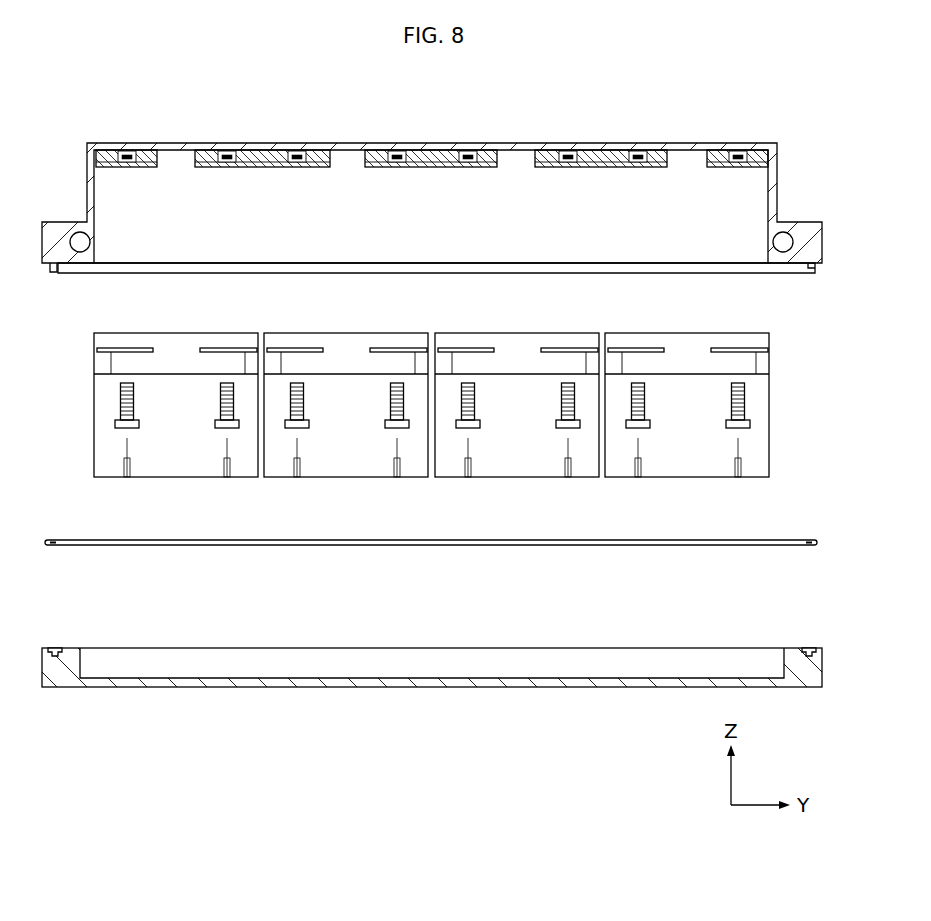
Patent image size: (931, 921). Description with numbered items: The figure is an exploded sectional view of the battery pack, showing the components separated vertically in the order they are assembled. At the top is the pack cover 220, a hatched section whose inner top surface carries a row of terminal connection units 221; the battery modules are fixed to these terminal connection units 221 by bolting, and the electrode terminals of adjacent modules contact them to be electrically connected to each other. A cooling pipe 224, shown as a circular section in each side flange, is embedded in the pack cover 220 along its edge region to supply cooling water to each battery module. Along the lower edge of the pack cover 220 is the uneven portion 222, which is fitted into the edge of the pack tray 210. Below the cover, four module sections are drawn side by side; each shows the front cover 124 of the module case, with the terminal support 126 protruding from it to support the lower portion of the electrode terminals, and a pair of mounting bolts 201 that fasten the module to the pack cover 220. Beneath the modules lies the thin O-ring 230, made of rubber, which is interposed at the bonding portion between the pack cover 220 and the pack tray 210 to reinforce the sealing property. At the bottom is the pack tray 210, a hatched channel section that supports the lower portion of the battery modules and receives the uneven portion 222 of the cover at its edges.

The pack cover 220 is at (436, 196).
The terminal connection unit 221 is at (429, 150).
The uneven portion 222 is at (812, 270).
The cooling pipe 224 is at (783, 242).
The front cover 124 is at (716, 405).
The terminal support 126 is at (718, 361).
The mounting bolt 201 is at (777, 430).
The O-ring 230 is at (676, 540).
The pack tray 210 is at (719, 631).